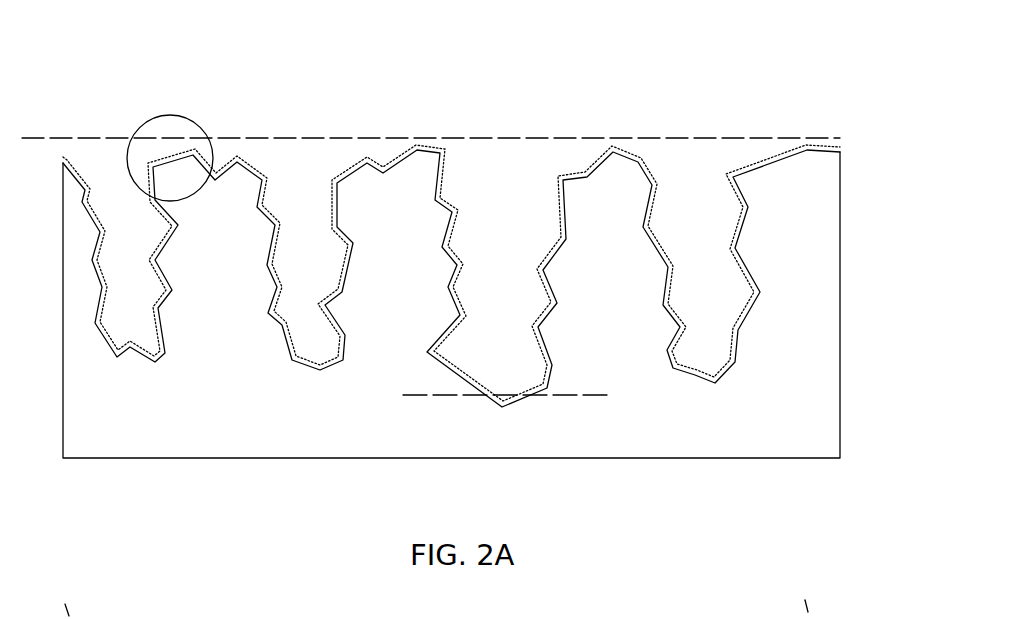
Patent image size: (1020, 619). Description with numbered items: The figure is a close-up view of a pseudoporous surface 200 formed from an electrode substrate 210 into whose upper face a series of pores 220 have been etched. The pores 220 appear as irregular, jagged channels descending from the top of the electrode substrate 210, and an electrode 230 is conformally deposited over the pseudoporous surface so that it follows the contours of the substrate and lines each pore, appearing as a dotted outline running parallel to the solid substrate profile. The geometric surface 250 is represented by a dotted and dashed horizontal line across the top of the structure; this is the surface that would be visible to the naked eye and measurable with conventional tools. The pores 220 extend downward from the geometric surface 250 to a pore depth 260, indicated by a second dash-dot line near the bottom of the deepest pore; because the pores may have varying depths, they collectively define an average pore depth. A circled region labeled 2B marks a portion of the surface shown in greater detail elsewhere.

The pseudoporous surface 200 is at (600, 103).
The electrode substrate 210 is at (290, 397).
The pores 220 is at (688, 190).
The electrode 230 is at (341, 170).
The geometric surface 250 is at (478, 140).
The pore depth 260 is at (572, 397).
The detail view region 2B is at (198, 126).